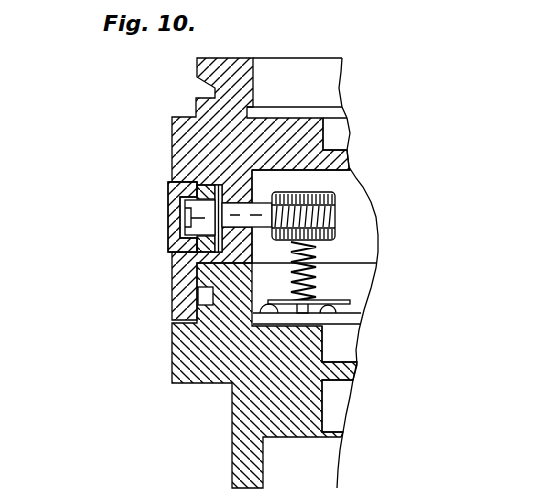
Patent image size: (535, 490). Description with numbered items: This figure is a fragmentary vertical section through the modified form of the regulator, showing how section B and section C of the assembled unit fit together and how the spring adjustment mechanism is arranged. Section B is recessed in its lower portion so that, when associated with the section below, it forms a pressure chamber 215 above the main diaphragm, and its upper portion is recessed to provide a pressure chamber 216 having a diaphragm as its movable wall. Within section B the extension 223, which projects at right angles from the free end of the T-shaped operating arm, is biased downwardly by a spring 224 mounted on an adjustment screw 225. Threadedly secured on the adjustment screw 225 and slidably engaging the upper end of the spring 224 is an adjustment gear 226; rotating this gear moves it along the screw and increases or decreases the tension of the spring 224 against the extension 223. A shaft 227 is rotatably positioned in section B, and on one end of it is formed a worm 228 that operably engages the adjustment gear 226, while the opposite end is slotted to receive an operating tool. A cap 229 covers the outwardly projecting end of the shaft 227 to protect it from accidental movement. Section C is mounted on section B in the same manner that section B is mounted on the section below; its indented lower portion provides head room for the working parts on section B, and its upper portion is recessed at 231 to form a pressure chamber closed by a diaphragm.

The pressure chamber 215 is at (333, 403).
The pressure chamber 216 is at (342, 345).
The extension 223 is at (348, 301).
The spring 224 is at (316, 262).
The adjustment screw 225 is at (293, 264).
The adjustment gear 226 is at (352, 183).
The shaft 227 is at (258, 200).
The worm 228 is at (336, 213).
The cap 229 is at (173, 201).
The recess 231 is at (333, 139).
The section B is at (185, 337).
The section C is at (188, 146).